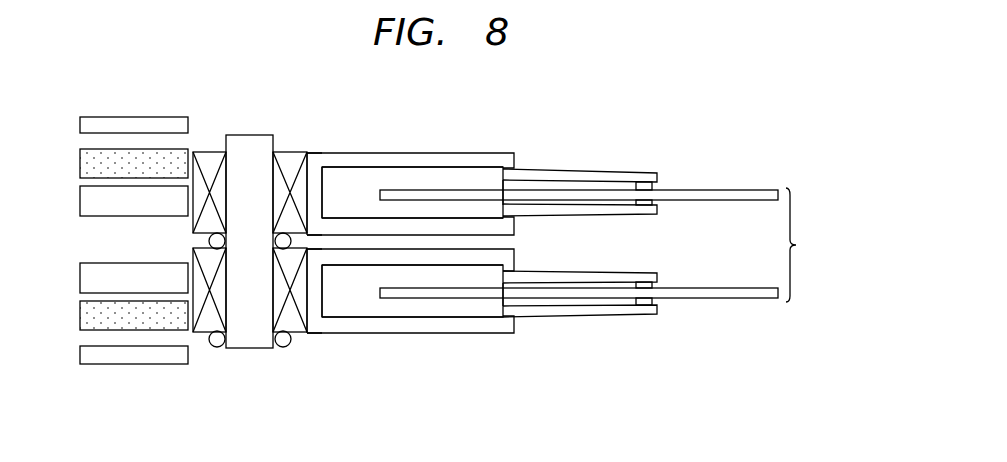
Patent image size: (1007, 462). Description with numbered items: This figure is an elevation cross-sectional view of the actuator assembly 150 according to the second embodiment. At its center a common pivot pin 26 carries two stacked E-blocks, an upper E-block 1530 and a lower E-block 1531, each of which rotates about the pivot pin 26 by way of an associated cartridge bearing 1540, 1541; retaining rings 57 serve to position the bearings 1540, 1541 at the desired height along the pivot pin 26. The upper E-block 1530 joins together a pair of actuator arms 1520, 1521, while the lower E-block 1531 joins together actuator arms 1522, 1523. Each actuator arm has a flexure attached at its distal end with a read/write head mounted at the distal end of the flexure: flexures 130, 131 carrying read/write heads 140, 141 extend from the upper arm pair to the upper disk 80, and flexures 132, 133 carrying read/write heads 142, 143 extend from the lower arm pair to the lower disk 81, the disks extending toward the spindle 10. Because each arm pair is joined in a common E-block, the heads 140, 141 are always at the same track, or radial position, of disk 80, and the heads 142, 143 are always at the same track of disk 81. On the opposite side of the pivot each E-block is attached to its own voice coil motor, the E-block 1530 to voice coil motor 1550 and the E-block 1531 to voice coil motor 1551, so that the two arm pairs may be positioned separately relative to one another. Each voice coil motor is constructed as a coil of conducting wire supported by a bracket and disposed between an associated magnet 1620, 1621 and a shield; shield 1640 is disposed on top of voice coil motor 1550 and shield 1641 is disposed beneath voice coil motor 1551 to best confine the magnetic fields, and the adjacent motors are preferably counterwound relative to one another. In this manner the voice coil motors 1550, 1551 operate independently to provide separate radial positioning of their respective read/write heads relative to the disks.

The actuator assembly 150 is at (609, 93).
The shield 1640 is at (97, 117).
The voice coil motor 1550 is at (80, 163).
The magnet 1620 is at (80, 200).
The magnet 1621 is at (80, 280).
The voice coil motor 1551 is at (80, 316).
The shield 1641 is at (97, 365).
The pivot pin 26 is at (236, 135).
The cartridge bearing 1540 is at (283, 152).
The cartridge bearing 1541 is at (293, 336).
The retaining rings 57 is at (281, 234).
The E-block 1530 is at (313, 168).
The E-block 1531 is at (314, 312).
The actuator arm 1520 is at (473, 152).
The actuator arm 1521 is at (343, 218).
The actuator arm 1522 is at (349, 264).
The actuator arm 1523 is at (473, 334).
The flexure 130 is at (560, 169).
The flexure 131 is at (553, 216).
The flexure 132 is at (650, 272).
The flexure 133 is at (556, 316).
The read/write head 140 is at (656, 182).
The read/write head 141 is at (658, 204).
The read/write head 142 is at (658, 284).
The read/write head 143 is at (658, 306).
The disk 80 is at (749, 190).
The disk 81 is at (750, 299).
The spindle 10 is at (832, 245).